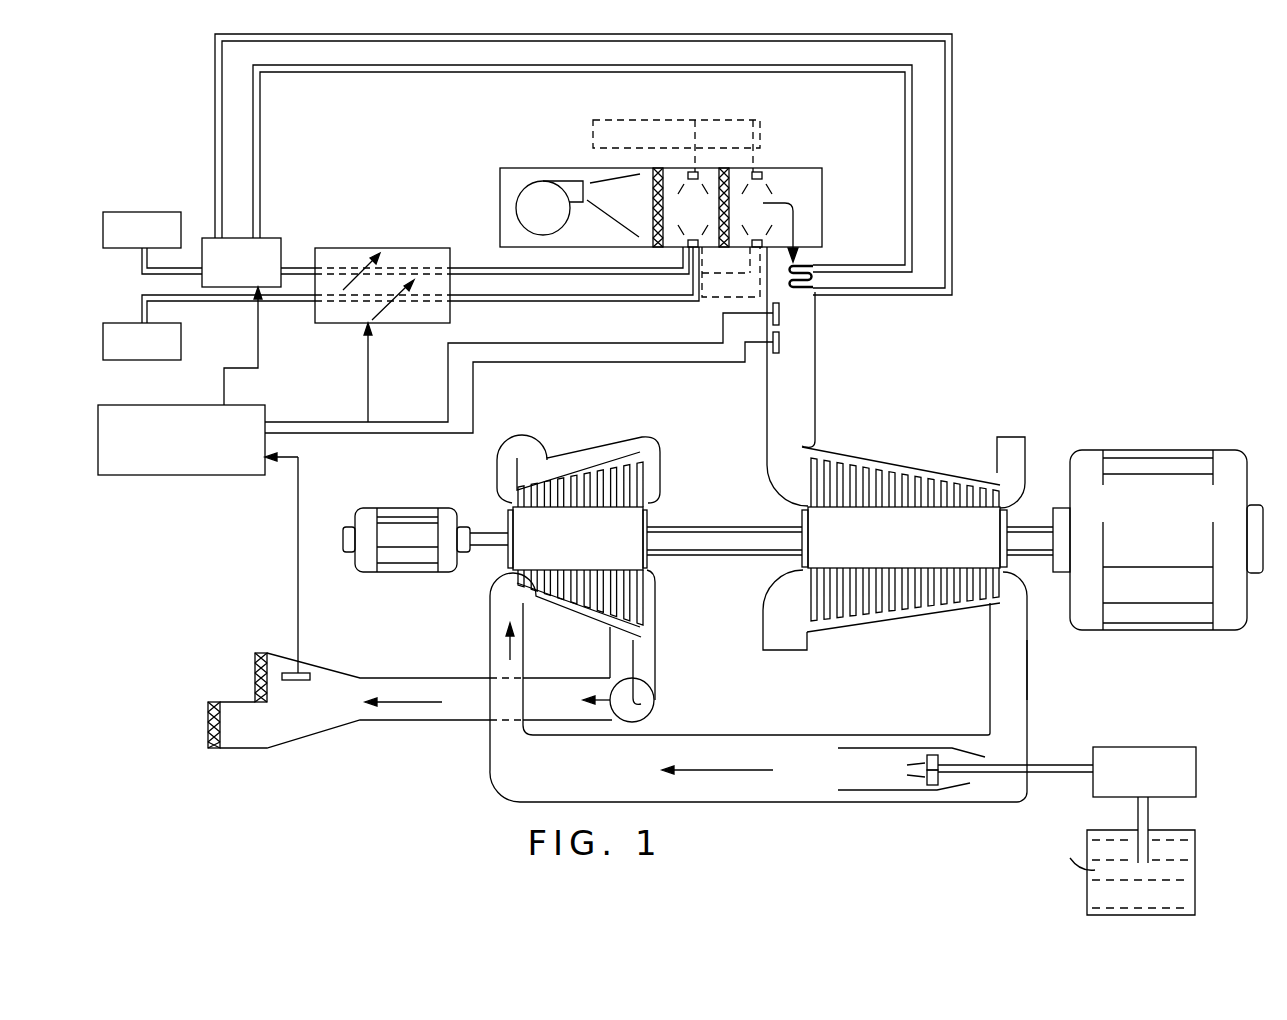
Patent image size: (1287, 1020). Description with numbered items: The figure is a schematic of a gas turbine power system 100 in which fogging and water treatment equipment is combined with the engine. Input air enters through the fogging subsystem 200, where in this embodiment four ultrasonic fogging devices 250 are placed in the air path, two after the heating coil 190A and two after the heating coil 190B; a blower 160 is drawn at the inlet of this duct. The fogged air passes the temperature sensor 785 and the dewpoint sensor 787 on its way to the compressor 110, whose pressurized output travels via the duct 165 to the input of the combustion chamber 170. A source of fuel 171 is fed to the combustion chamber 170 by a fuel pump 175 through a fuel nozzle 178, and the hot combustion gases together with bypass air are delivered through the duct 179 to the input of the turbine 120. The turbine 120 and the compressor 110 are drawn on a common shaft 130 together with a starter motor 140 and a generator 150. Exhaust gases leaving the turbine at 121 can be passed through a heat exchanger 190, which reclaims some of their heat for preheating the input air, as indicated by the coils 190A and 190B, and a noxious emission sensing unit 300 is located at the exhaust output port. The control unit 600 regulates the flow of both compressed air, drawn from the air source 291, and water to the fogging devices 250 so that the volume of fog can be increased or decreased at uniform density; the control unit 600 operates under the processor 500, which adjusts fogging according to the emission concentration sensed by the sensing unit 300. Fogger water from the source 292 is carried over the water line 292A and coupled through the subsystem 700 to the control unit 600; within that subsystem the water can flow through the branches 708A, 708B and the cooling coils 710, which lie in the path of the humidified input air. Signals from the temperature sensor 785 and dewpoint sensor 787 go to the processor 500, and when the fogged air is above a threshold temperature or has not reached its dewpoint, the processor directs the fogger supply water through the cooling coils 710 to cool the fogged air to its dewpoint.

The air intake duct system 100 is at (428, 177).
The compressor 110 is at (890, 446).
The turbine 120 is at (585, 437).
The turbine exhaust output 121 is at (648, 653).
The shaft 130 is at (492, 550).
The starter motor 140 is at (365, 572).
The generator 150 is at (1125, 450).
The fan 160 is at (520, 210).
The duct 165 is at (1025, 680).
The combustion chamber 170 is at (873, 782).
The source of fuel 171 is at (1087, 835).
The fuel pump 175 is at (1145, 747).
The fuel nozzle 178 is at (935, 787).
The duct 179 is at (492, 762).
The heat exchanger 190 is at (208, 706).
The heating coil 190A is at (655, 176).
The heating coil 190B is at (730, 170).
The fogging subsystem 200 is at (708, 172).
The ultrasonic fogging devices 250 is at (685, 172).
The air supply 291 is at (181, 340).
The water source 292 is at (168, 212).
The water supply line 292A is at (142, 266).
The noxious emission sensing unit 300 is at (313, 673).
The processor 500 is at (238, 405).
The control unit 600 is at (365, 248).
The water supply subsystem 700 is at (270, 250).
The branch 708A is at (263, 153).
The branch 708B is at (213, 146).
The cooling coils 710 is at (805, 270).
The temperature sensor 785 is at (780, 313).
The dewpoint sensor 787 is at (780, 342).